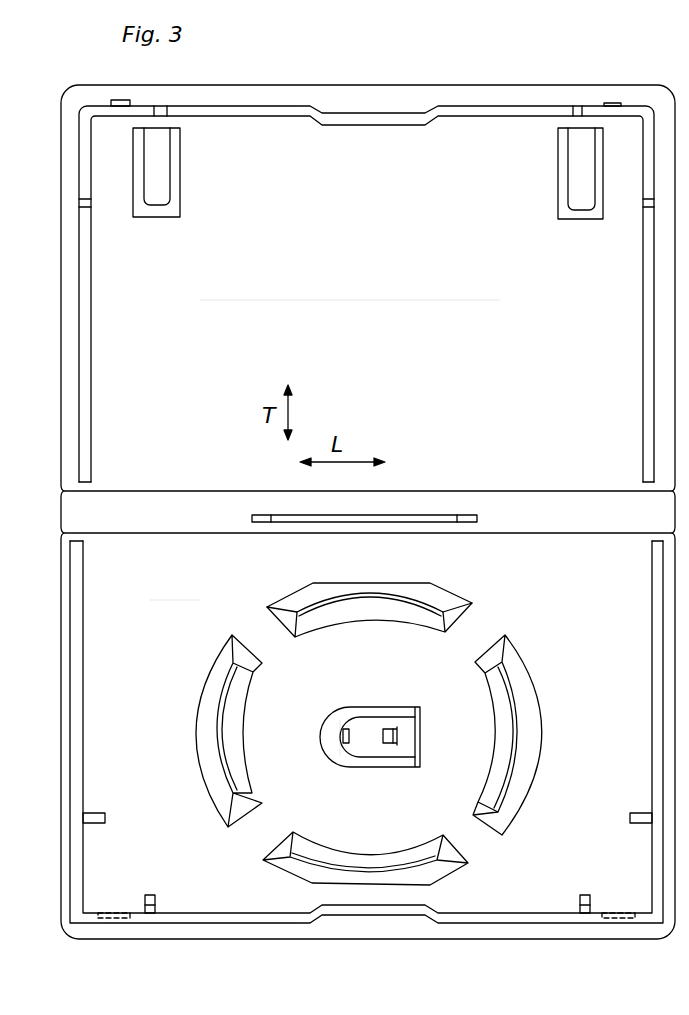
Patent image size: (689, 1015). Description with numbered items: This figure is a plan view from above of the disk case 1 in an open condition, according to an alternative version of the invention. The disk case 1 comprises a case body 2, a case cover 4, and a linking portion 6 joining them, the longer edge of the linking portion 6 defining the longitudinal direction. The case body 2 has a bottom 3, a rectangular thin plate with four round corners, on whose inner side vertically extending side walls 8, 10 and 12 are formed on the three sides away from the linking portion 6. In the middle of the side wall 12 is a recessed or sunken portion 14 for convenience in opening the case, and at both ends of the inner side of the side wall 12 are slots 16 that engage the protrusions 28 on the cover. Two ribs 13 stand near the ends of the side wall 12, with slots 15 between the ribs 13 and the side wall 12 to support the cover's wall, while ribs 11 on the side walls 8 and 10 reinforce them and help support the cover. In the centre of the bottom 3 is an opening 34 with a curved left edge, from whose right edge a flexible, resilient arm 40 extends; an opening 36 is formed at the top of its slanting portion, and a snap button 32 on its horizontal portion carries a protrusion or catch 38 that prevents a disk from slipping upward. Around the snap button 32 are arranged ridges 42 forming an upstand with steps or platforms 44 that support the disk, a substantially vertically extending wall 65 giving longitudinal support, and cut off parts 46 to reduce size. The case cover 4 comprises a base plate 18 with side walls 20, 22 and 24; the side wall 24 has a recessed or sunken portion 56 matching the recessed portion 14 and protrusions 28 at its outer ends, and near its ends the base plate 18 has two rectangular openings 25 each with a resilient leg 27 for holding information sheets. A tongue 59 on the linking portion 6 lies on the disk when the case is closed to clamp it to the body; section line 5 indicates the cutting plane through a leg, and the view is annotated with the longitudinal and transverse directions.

The disk case 1 is at (624, 76).
The case body 2 is at (54, 791).
The bottom 3 is at (178, 606).
The case cover 4 is at (56, 213).
The section line 5- 5 is at (582, 229).
The linking portion 6 is at (56, 517).
The side wall 8 is at (656, 595).
The side wall 10 is at (77, 647).
The rib 11 is at (104, 814).
The side wall 12 is at (227, 917).
The rib 13 is at (150, 895).
The recessed or sunken portion 14 is at (365, 918).
The slot 15 is at (601, 884).
The slot 16 is at (108, 913).
The base plate 18 is at (352, 306).
The side wall 20 is at (89, 302).
The side wall 22 is at (650, 286).
The side wall 24 is at (228, 117).
The rectangular opening 25 is at (173, 211).
The resilient leg 27 is at (163, 164).
The protrusion 28 is at (127, 100).
The snap button 32 is at (372, 744).
The opening 34 is at (338, 752).
The opening 36 is at (397, 730).
The protrusion or catch 38 is at (383, 733).
The arm 40 is at (408, 745).
The ridge 42 is at (397, 603).
The step or platform 44 is at (348, 602).
The cut off part 46 is at (392, 582).
The recessed or sunken portion 56 is at (353, 112).
The tongue 59 is at (424, 517).
The vertically extending wall 65 is at (500, 694).